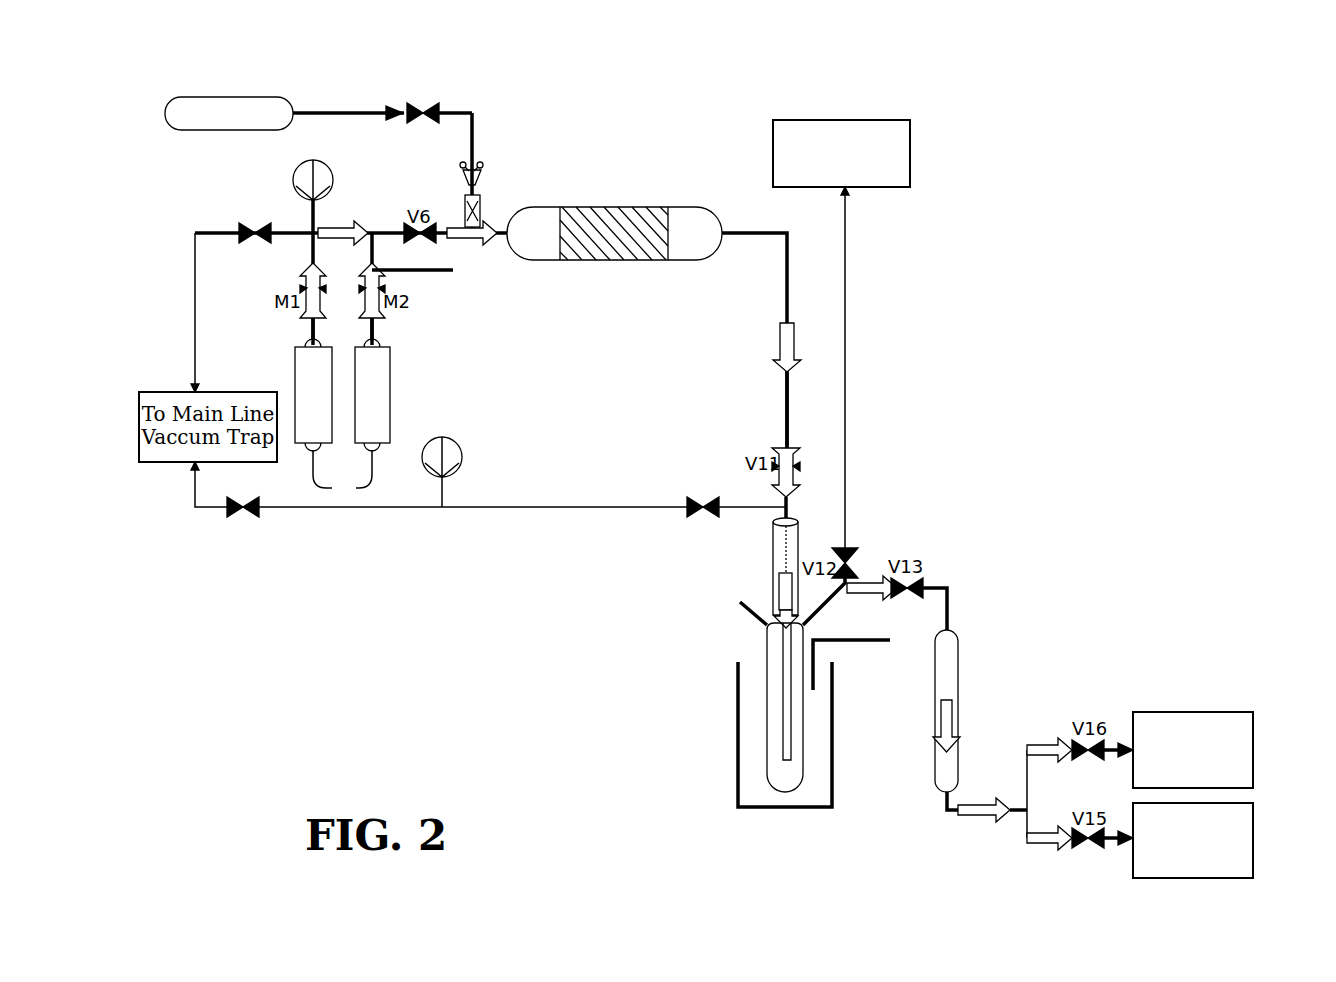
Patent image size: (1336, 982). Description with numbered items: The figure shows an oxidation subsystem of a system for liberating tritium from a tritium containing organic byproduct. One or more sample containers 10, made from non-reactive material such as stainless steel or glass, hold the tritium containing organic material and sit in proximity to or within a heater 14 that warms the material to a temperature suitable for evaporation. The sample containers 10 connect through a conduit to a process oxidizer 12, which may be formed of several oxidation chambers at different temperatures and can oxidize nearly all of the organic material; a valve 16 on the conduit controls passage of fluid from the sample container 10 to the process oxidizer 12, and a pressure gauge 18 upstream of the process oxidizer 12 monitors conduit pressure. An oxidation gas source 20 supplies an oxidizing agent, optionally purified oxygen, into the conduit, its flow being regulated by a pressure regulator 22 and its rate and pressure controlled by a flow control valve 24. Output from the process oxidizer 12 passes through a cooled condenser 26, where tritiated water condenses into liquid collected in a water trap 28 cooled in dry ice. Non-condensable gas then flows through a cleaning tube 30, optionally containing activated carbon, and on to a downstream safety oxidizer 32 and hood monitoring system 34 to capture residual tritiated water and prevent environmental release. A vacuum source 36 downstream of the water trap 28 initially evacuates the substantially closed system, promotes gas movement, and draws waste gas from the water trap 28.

The sample container 10 is at (306, 342).
The process oxidizer 12 is at (682, 207).
The heater 14 is at (295, 372).
The valve 16 is at (422, 244).
The pressure gauge 18 is at (296, 174).
The oxidation gas source 20 is at (228, 110).
The pressure regulator 22 is at (486, 178).
The flow control valve 24 is at (464, 210).
The condenser 26 is at (790, 545).
The water trap 28 is at (800, 769).
The cleaning tube 30 is at (950, 668).
The safety oxidizer 32 is at (1253, 748).
The hood monitoring system 34 is at (1253, 838).
The vacuum source 36 is at (910, 160).